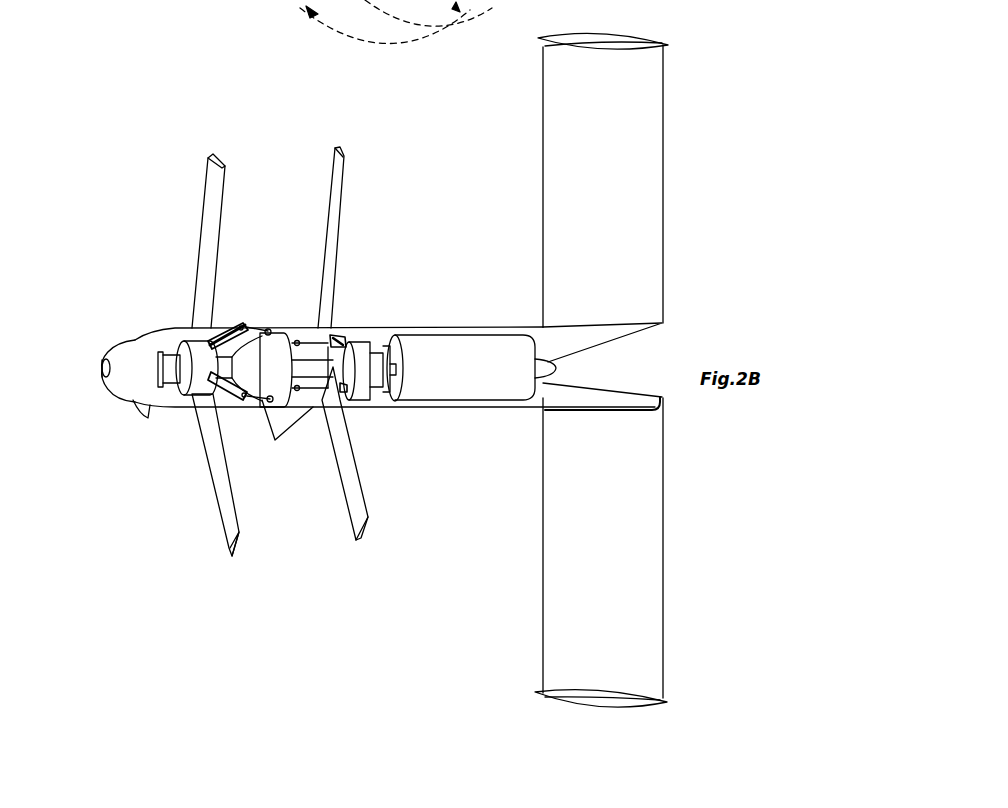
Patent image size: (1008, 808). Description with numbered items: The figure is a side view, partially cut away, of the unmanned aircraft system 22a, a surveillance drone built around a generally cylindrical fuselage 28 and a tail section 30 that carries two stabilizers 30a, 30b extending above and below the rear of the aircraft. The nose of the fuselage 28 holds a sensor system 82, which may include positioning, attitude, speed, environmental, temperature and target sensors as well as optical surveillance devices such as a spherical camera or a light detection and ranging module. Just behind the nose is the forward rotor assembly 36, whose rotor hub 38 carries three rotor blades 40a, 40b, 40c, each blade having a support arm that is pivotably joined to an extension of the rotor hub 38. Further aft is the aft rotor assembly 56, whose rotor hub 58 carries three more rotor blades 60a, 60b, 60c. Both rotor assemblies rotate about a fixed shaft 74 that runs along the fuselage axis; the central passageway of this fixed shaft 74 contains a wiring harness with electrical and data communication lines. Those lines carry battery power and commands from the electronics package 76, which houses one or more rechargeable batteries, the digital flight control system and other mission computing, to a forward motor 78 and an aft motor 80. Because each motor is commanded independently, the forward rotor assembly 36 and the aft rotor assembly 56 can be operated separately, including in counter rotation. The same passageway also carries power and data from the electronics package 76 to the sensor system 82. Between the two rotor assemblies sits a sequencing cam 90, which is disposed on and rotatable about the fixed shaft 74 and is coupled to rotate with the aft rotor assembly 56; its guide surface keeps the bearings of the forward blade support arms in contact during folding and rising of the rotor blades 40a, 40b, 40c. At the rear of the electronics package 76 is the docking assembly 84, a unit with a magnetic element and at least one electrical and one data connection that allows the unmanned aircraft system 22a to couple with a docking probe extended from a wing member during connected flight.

The unmanned aircraft system 22a is at (630, 357).
The fuselage 28 is at (487, 410).
The tail section 30 is at (636, 357).
The stabilizer 30a is at (640, 40).
The stabilizer 30b is at (640, 700).
The forward rotor assembly 36 is at (140, 355).
The rotor hub 38 is at (190, 400).
The rotor blade 40a is at (207, 193).
The rotor blade 40b is at (225, 525).
The rotor blade 40c is at (133, 412).
The aft rotor assembly 56 is at (358, 343).
The rotor hub 58 is at (355, 330).
The rotor blade 60a is at (340, 192).
The rotor blade 60b is at (368, 485).
The rotor blade 60c is at (278, 430).
The fixed shaft 74 is at (400, 343).
The electronics package 76 is at (465, 338).
The forward motor 78 is at (178, 345).
The aft motor 80 is at (377, 341).
The sensor system 82 is at (115, 350).
The docking assembly 84 is at (556, 368).
The sequencing cam 90 is at (282, 330).